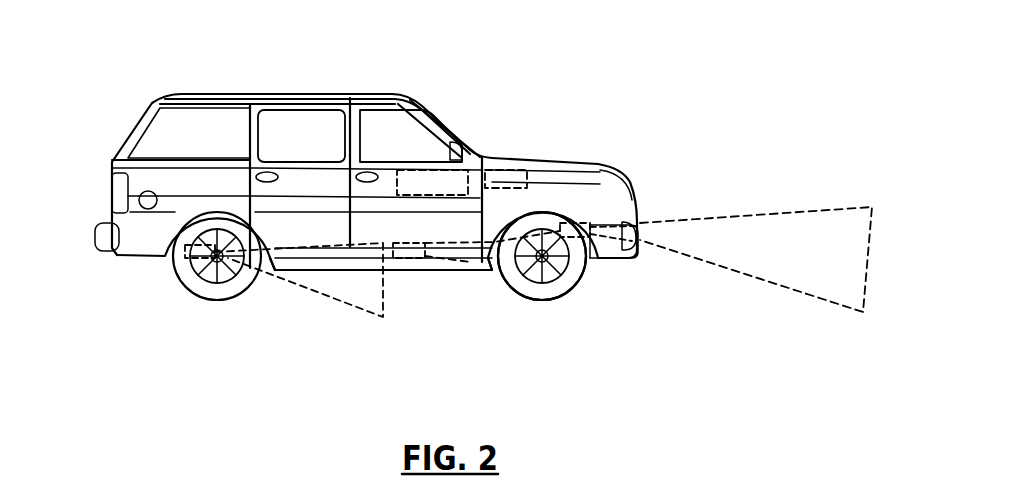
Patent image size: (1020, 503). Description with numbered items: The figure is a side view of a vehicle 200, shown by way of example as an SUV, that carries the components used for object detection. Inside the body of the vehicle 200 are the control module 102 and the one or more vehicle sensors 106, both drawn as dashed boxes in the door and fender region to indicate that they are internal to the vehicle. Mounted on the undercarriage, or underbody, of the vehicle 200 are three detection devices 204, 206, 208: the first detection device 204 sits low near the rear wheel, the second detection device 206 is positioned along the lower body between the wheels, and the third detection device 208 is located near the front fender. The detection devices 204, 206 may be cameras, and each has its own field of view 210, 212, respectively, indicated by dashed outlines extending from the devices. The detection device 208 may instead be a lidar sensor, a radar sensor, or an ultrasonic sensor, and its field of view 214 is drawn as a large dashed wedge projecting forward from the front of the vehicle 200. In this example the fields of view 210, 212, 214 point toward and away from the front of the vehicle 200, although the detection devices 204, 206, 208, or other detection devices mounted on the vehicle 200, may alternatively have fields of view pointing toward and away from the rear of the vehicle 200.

The vehicle 200 is at (163, 59).
The control module 102 is at (427, 168).
The vehicle sensors 106 is at (508, 168).
The detection device 204 is at (187, 260).
The detection device 206 is at (413, 258).
The detection device 208 is at (577, 220).
The field of view 210 is at (317, 293).
The field of view 212 is at (497, 278).
The field of view 214 is at (712, 220).